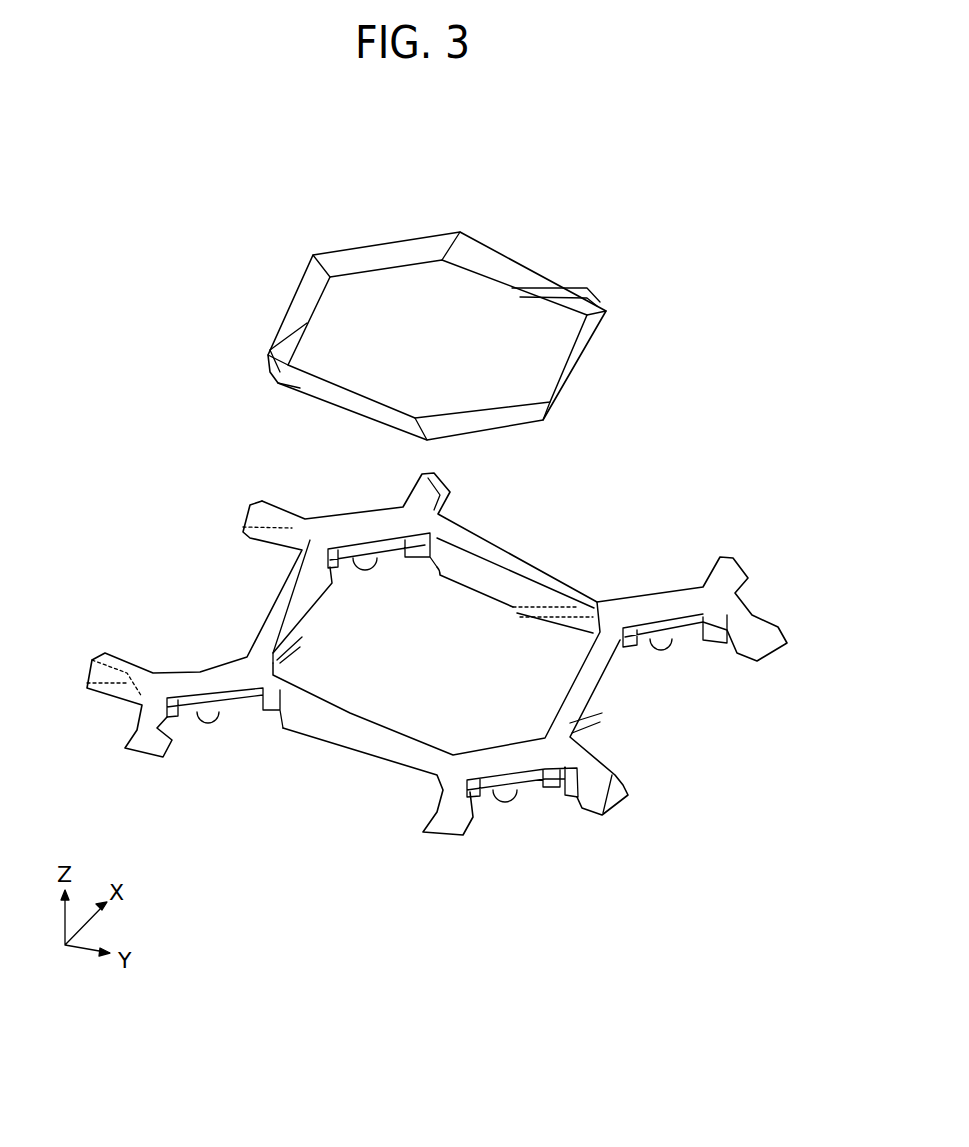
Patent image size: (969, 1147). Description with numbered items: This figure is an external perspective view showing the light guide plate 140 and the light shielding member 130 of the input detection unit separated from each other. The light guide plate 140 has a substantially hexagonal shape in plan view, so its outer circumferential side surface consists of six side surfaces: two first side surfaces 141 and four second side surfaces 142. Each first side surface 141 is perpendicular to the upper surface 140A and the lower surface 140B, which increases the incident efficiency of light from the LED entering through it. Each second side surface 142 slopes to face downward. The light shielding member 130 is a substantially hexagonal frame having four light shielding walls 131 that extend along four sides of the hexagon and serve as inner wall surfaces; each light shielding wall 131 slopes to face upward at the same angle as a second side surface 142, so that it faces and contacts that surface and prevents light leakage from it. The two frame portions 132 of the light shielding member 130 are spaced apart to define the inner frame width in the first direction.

The light shielding member 130 is at (437, 678).
The light shielding wall 131 is at (305, 618).
The frame portion 132 is at (360, 527).
The light guide plate 140 is at (459, 336).
The upper surface 140A is at (555, 345).
The lower surface 140B is at (533, 430).
The first side surface 141 is at (386, 255).
The second side surface 142 is at (478, 255).